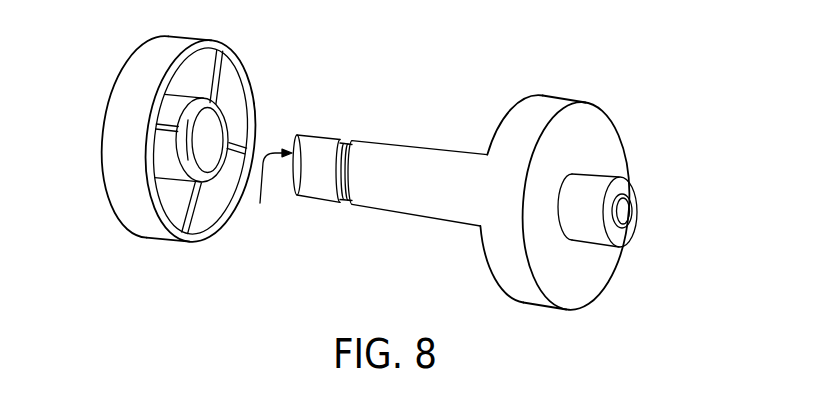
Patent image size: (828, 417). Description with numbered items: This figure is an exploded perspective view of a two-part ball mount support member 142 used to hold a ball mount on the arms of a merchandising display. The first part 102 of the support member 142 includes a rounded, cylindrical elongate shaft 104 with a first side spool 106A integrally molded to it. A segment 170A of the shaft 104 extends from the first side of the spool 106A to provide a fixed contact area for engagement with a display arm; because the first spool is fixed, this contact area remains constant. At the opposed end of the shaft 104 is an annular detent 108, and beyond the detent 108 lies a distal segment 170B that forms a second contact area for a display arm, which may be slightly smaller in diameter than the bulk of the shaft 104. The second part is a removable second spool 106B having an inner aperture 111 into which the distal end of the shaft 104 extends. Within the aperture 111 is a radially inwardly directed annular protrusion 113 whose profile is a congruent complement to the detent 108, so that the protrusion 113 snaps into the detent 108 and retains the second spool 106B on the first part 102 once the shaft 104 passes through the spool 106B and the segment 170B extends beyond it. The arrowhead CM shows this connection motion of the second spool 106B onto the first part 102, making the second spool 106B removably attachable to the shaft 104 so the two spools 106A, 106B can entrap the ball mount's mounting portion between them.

The first part 102 is at (390, 163).
The elongate shaft 104 is at (450, 155).
The first side spool 106A is at (610, 133).
The second spool 106B is at (176, 50).
The annular detent 108 is at (363, 140).
The inner aperture 111 is at (197, 155).
The annular protrusion 113 is at (190, 135).
The support member 142 is at (404, 101).
The shaft segment 170A is at (595, 187).
The shaft segment 170B is at (322, 140).
The connection motion CM is at (268, 187).